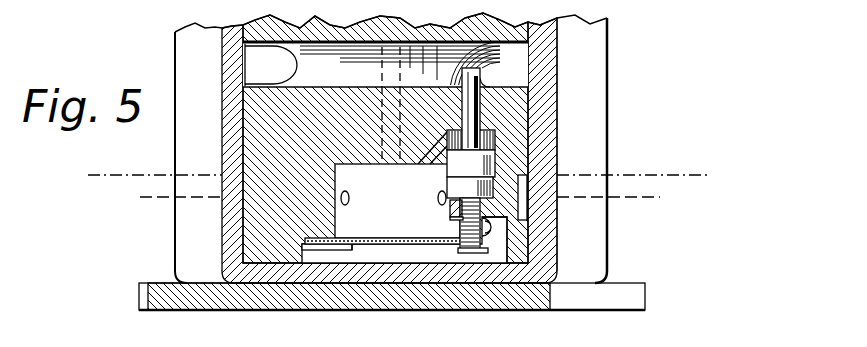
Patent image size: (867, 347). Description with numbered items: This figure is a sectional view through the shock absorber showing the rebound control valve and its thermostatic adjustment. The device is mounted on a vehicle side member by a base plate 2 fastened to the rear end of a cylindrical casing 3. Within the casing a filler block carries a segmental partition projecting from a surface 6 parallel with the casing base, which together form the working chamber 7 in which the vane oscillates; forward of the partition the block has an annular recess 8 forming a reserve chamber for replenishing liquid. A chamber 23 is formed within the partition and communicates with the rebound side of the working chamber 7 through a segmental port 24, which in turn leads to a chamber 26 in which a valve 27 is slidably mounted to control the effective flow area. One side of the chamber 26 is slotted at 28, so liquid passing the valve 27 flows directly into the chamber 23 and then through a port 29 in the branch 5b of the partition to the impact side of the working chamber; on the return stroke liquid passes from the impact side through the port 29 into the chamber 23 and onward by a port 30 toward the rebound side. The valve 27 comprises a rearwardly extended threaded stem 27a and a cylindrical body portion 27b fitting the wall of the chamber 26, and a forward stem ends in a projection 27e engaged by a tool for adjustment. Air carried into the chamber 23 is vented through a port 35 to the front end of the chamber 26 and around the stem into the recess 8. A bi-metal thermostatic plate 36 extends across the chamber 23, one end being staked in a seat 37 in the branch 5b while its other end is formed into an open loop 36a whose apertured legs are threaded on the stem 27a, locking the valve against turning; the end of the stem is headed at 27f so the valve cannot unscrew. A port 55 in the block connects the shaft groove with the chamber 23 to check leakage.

The base plate 2 is at (275, 310).
The cylindrical casing 3 is at (553, 91).
The branch of the segmental partition 5b is at (250, 235).
The surface of the block 6 is at (157, 197).
The working chamber 7 is at (107, 175).
The annular recess 8 is at (265, 63).
The chamber 23 is at (377, 252).
The segmental port 24 is at (525, 213).
The chamber 26 is at (490, 145).
The valve 27 is at (477, 113).
The threaded stem 27a is at (462, 244).
The cylindrical body portion 27b is at (497, 162).
The projection 27e is at (476, 76).
The headed end of stem 27f is at (480, 256).
The slot 28 is at (446, 191).
The port 29 is at (349, 192).
The port 30 is at (458, 208).
The port 35 is at (443, 170).
The bi-metal thermostatic plate 36 is at (377, 246).
The open loop 36a is at (505, 236).
The seat 37 is at (330, 252).
The port 55 is at (405, 239).